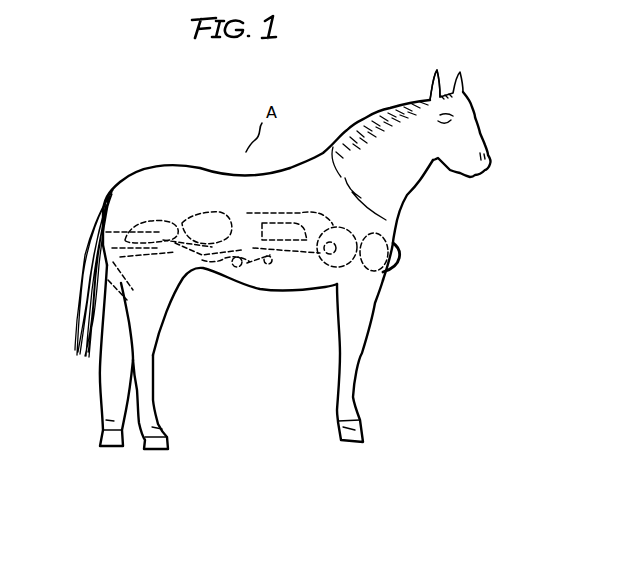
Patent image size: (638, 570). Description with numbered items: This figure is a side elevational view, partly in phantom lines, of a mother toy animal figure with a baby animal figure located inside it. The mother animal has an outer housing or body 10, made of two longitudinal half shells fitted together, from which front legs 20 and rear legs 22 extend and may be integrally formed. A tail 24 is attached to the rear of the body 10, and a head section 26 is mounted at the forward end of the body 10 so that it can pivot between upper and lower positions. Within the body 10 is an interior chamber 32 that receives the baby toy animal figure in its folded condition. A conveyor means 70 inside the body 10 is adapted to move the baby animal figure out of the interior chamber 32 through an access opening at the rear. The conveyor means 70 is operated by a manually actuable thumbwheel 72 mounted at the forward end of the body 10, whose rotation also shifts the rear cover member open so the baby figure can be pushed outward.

The outer housing 10 is at (176, 160).
The front legs 20 is at (355, 348).
The rear legs 22 is at (153, 368).
The tail 24 is at (93, 207).
The head section 26 is at (385, 104).
The interior chamber 32 is at (292, 285).
The conveyor means 70 is at (243, 267).
The thumbwheel 72 is at (399, 249).